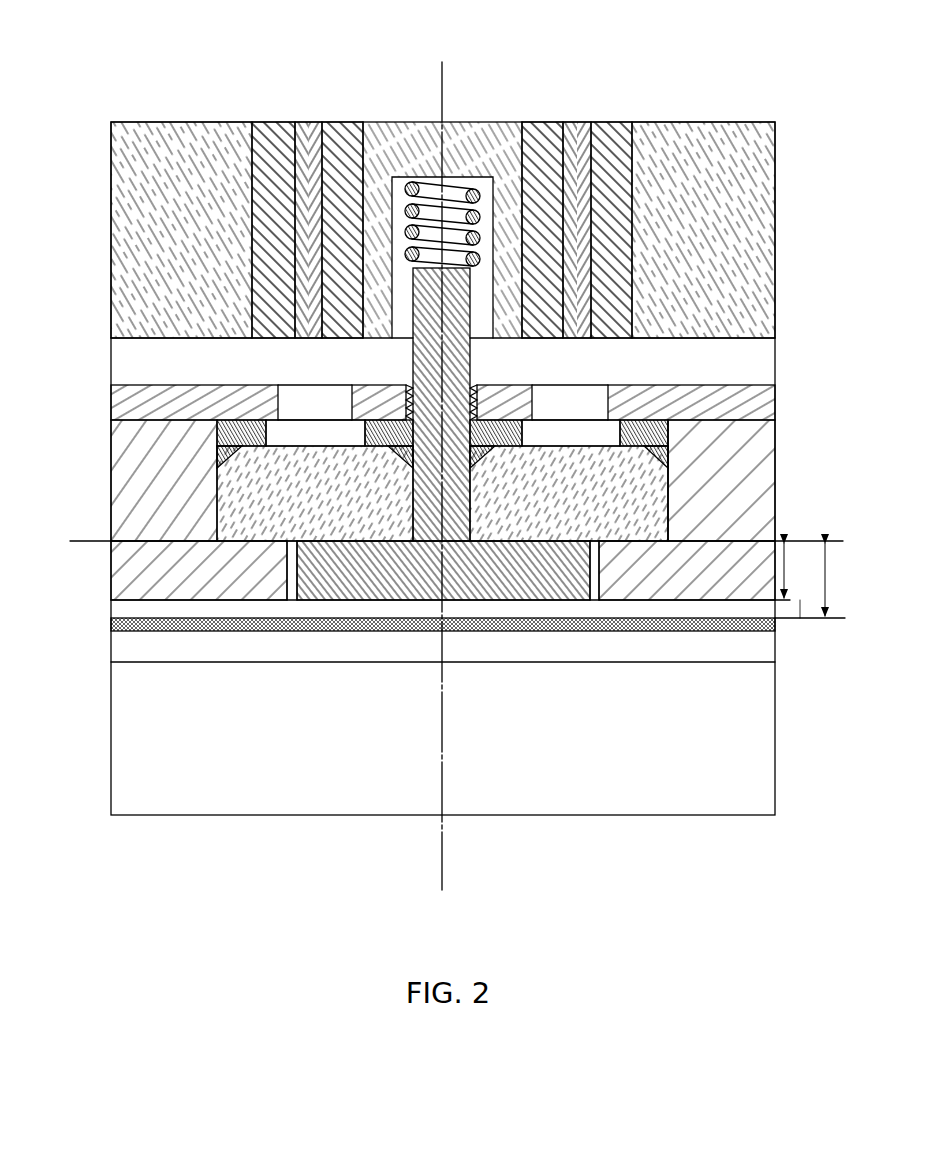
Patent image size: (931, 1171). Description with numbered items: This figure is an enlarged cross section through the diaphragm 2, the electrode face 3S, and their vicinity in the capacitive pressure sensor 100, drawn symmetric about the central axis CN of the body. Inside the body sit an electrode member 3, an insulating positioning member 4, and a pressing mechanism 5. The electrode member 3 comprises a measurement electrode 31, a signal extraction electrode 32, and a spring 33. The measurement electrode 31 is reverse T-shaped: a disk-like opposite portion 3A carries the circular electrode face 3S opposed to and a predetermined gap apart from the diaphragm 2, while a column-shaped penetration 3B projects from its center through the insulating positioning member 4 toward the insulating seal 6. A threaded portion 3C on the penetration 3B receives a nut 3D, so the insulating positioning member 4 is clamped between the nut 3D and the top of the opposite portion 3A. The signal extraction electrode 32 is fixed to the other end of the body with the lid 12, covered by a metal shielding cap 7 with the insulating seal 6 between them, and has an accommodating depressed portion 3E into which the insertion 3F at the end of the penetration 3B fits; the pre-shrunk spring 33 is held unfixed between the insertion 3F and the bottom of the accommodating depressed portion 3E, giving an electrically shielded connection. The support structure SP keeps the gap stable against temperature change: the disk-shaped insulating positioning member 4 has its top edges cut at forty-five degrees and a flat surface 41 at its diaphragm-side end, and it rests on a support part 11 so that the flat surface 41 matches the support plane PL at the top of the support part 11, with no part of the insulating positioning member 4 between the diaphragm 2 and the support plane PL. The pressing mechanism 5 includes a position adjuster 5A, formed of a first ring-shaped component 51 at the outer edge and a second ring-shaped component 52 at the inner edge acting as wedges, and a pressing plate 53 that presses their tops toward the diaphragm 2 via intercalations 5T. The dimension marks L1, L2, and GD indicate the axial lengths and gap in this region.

The capacitive pressure sensor 100 is at (256, 68).
The lid 12 is at (658, 95).
The insulating seal 6 is at (546, 122).
The shielding cap 7 is at (578, 122).
The position adjuster 5A is at (660, 347).
The pressing mechanism 5 is at (622, 360).
The first ring-shaped component 51 is at (658, 440).
The second ring-shaped component 52 is at (482, 440).
The pressing plate 53 is at (733, 385).
The intercalations 5T is at (668, 432).
The insulating positioning member 4 is at (668, 486).
The electrode member 3 is at (82, 140).
The opposite portion 3A is at (287, 559).
The penetration 3B is at (410, 503).
The threaded portion 3C is at (400, 404).
The nut 3D is at (383, 385).
The accommodating depressed portion 3E is at (476, 180).
The insertion 3F is at (400, 299).
The electrode face 3S is at (510, 601).
The measurement electrode 31 is at (122, 508).
The signal extraction electrode 32 is at (392, 157).
The spring 33 is at (405, 213).
The flat surface 41 is at (340, 545).
The support part 11 is at (267, 582).
The diaphragm 2 is at (392, 633).
The central axis CN is at (442, 82).
The support plane PL is at (93, 549).
The support structure SP is at (132, 583).
The length L1 is at (794, 570).
The length L2 is at (835, 579).
The gap GD is at (809, 609).